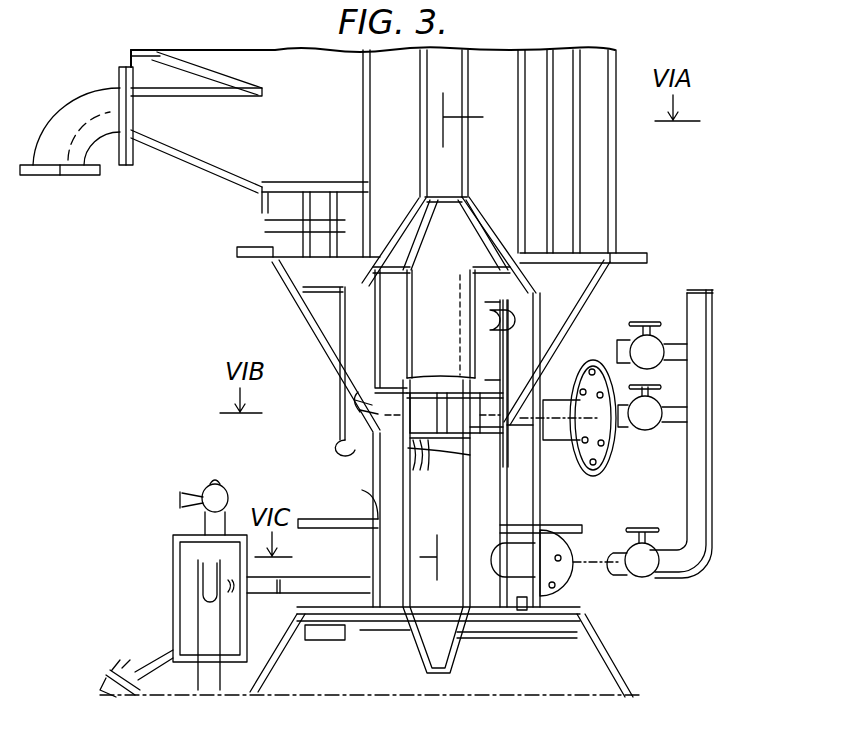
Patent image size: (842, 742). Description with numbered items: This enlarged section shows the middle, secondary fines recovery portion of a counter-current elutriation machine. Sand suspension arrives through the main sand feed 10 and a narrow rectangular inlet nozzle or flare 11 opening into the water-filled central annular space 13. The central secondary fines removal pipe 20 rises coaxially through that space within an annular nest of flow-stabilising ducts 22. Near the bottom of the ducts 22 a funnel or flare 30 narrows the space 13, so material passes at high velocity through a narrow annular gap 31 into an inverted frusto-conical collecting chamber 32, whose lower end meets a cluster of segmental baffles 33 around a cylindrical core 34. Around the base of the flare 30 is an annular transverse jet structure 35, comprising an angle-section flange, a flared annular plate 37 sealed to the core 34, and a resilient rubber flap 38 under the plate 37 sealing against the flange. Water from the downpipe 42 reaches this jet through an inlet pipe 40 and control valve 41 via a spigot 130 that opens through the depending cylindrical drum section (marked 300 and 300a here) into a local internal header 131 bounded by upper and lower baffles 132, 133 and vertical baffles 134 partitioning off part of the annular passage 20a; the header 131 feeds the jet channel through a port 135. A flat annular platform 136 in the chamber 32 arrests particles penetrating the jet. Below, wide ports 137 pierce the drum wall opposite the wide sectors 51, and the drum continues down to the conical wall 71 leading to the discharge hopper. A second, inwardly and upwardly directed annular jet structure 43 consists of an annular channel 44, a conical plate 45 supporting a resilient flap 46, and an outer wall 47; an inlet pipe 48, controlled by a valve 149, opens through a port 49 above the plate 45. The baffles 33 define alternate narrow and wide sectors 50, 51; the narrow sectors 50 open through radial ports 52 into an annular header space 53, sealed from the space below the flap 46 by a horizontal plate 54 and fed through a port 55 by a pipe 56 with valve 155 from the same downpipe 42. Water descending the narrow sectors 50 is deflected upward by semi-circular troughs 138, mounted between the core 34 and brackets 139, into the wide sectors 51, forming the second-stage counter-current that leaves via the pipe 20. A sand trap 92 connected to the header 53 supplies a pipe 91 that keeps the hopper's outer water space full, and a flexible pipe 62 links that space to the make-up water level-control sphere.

The main sand feed 10 is at (68, 176).
The inlet nozzle 11 is at (173, 150).
The central annular space 13 is at (404, 96).
The secondary fines removal pipe 20 is at (421, 130).
The annular passage 20a is at (385, 338).
The flow-stabilising ducts 22 is at (300, 228).
The funnel or flare 30 is at (415, 201).
The annular gap 31 is at (376, 252).
The collecting chamber 32 is at (290, 265).
The segmental baffles 33 is at (483, 460).
The cylindrical core 34 is at (395, 473).
The annular transverse jet structure 35 is at (337, 284).
The flared annular plate 37 is at (385, 304).
The resilient flap 38 is at (355, 294).
The inlet pipe 40 is at (672, 345).
The control valve 41 is at (341, 398).
The downpipe 42 is at (708, 276).
The second annular jet structure 43 is at (345, 404).
The annular channel 44 is at (365, 424).
The conical plate 45 is at (345, 444).
The resilient flap 46 is at (375, 452).
The outer wall 47 is at (574, 472).
The inlet pipe 48 is at (670, 430).
The port 49 is at (562, 446).
The narrow sectors 50 is at (485, 503).
The wide sectors 51 is at (393, 521).
The radial ports 52 is at (548, 578).
The annular header space 53 is at (355, 541).
The horizontal plate 54 is at (362, 494).
The port 55 is at (515, 555).
The pipe 56 is at (630, 540).
The flexible pipe 62 is at (210, 606).
The conical wall 71 is at (605, 670).
The pipe 91 is at (218, 692).
The sand trap 92 is at (175, 552).
The spigot 130 is at (488, 356).
The internal header 131 is at (495, 336).
The upper baffle 132 is at (485, 268).
The lower baffle 133 is at (446, 383).
The vertical baffles 134 is at (466, 318).
The port 135 is at (500, 297).
The flat annular platform 136 is at (592, 266).
The ports 137 is at (439, 466).
The semi-circular troughs 138 is at (380, 640).
The brackets 139 is at (303, 645).
The valve 149 is at (636, 440).
The valve 155 is at (654, 514).
The fitting 300 is at (360, 368).
The pipe 300a is at (368, 574).